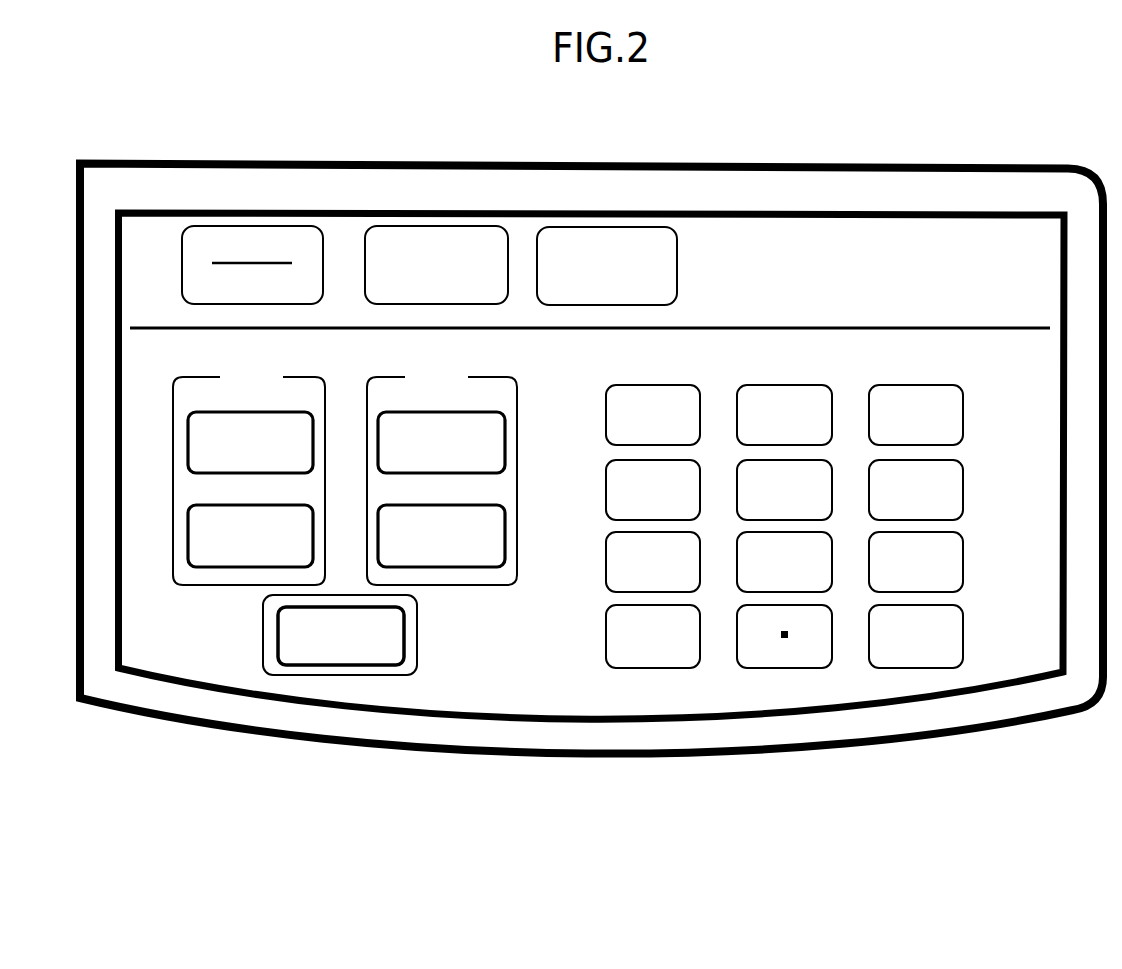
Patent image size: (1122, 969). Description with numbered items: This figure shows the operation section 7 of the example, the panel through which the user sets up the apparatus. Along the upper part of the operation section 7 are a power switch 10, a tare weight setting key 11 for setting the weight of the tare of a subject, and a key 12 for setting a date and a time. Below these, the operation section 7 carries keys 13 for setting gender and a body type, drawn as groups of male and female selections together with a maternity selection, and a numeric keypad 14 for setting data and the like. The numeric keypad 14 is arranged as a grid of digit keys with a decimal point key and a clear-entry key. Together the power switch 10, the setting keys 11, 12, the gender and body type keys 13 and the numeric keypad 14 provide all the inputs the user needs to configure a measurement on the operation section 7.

The operation section 7 is at (1081, 145).
The power switch 10 is at (267, 240).
The tare weight setting key 11 is at (450, 240).
The date and time setting key 12 is at (633, 240).
The gender and body type setting keys 13 is at (200, 662).
The numeric keypad 14 is at (592, 675).